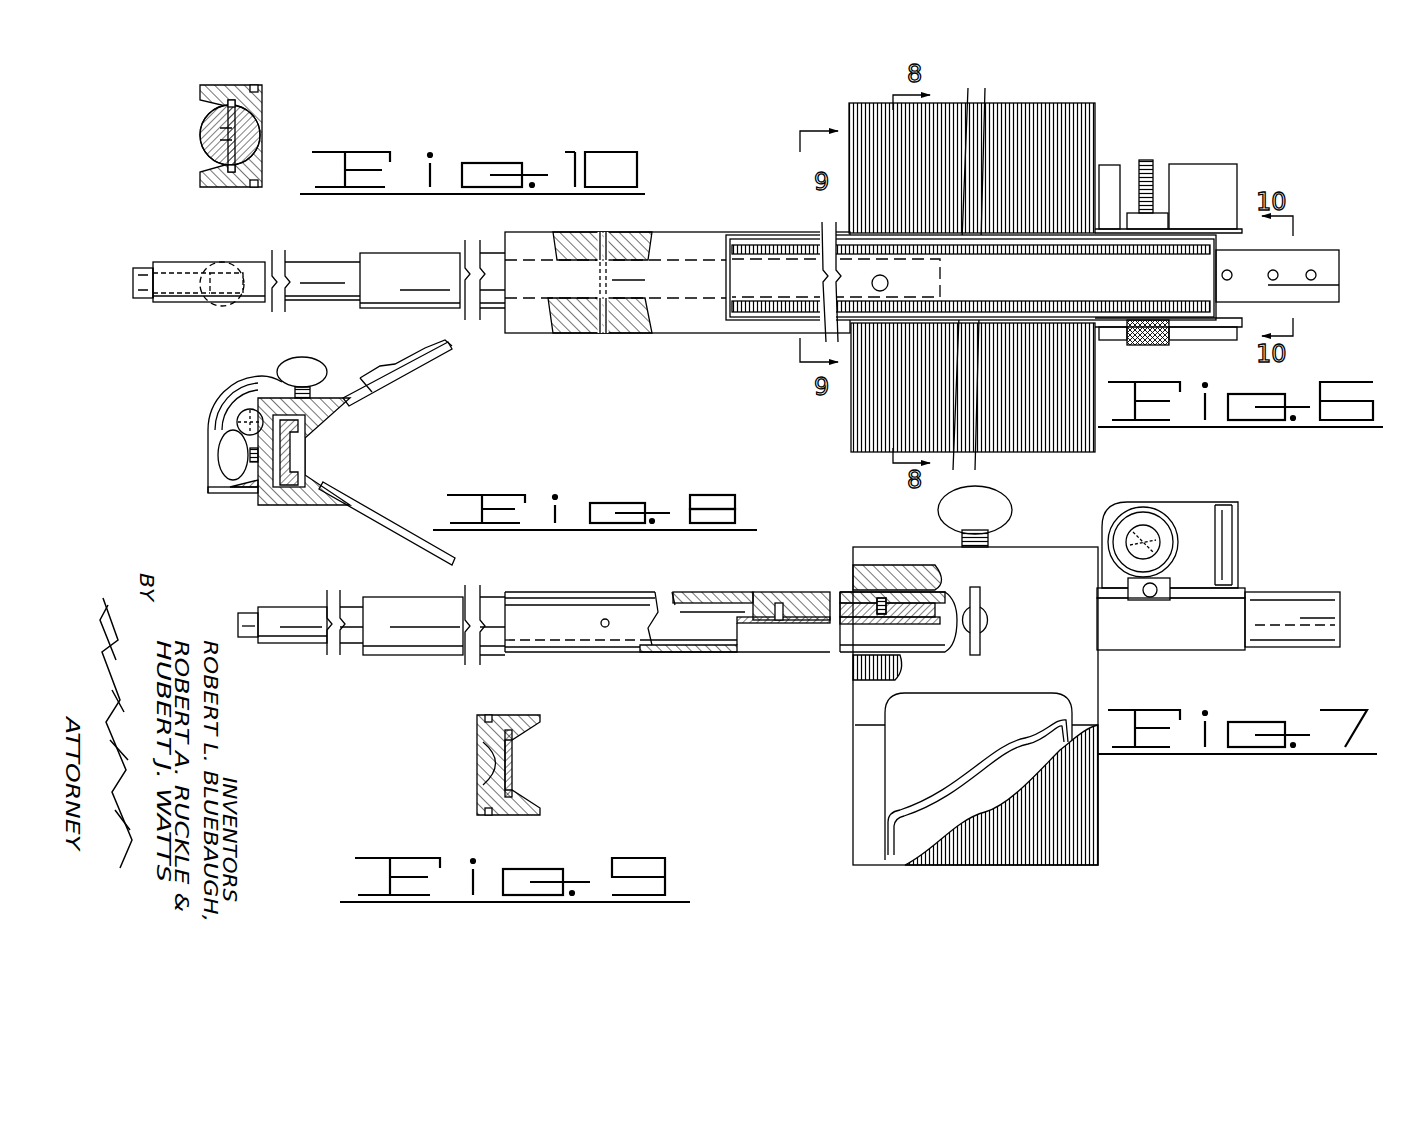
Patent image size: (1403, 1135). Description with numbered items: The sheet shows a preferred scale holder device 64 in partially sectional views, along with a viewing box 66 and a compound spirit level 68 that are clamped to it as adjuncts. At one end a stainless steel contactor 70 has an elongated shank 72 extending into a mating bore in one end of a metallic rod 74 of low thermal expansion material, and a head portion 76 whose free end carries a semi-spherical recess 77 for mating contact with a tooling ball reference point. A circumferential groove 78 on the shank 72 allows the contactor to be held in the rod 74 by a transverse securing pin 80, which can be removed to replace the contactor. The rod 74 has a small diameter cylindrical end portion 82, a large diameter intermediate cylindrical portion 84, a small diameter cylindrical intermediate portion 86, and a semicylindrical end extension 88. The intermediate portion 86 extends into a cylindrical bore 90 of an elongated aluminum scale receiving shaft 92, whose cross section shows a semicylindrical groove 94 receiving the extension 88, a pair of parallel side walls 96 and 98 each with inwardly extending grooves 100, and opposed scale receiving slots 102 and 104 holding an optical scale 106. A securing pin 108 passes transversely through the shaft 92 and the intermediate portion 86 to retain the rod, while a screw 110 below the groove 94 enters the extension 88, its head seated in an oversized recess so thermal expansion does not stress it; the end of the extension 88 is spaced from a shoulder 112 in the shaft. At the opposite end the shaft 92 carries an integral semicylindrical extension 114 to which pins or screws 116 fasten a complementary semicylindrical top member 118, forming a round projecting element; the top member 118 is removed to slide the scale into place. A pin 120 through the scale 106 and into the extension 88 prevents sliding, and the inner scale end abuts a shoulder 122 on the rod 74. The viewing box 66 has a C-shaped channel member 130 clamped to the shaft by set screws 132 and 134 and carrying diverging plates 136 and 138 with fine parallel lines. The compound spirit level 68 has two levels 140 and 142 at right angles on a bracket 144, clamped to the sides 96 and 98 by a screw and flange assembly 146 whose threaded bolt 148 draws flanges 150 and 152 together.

In FIG. 6, the scale holder device 64 is at (566, 231).
In FIG. 6, the viewing box 66 is at (1100, 120).
In FIG. 8, the viewing box 66 is at (265, 512).
In FIG. 7, the viewing box 66 is at (852, 786).
In FIG. 6, the compound spirit level 68 is at (1242, 188).
In FIG. 8, the compound spirit level 68 is at (207, 405).
In FIG. 7, the compound spirit level 68 is at (1246, 530).
In FIG. 6, the contactor 70 is at (150, 312).
In FIG. 6, the shank 72 is at (180, 283).
In FIG. 6, the rod 74 is at (396, 310).
In FIG. 7, the rod 74 is at (391, 658).
In FIG. 6, the head portion 76 is at (142, 300).
In FIG. 7, the head portion 76 is at (252, 625).
In FIG. 6, the semi-spherical recess 77 is at (133, 286).
In FIG. 6, the circumferential groove 78 is at (224, 294).
In FIG. 6, the securing pin 80 is at (222, 302).
In FIG. 6, the small diameter cylindrical end portion 82 is at (318, 287).
In FIG. 7, the small diameter cylindrical end portion 82 is at (297, 630).
In FIG. 6, the large diameter intermediate cylindrical portion 84 is at (425, 293).
In FIG. 7, the large diameter intermediate cylindrical portion 84 is at (386, 600).
In FIG. 6, the small diameter cylindrical intermediate portion 86 is at (586, 308).
In FIG. 7, the small diameter cylindrical intermediate portion 86 is at (707, 595).
In FIG. 7, the semicylindrical end extension 88 is at (758, 595).
In FIG. 9, the semicylindrical end extension 88 is at (487, 755).
In FIG. 6, the cylindrical bore 90 is at (640, 236).
In FIG. 7, the cylindrical bore 90 is at (670, 614).
In FIG. 6, the scale receiving shaft 92 is at (697, 335).
In FIG. 7, the scale receiving shaft 92 is at (619, 657).
In FIG. 9, the scale receiving shaft 92 is at (476, 795).
In FIG. 10, the scale receiving shaft 92 is at (266, 93).
In FIG. 9, the semicylindrical groove 94 is at (483, 770).
In FIG. 9, the side wall 96 is at (521, 816).
In FIG. 10, the side wall 96 is at (238, 188).
In FIG. 9, the side wall 98 is at (515, 720).
In FIG. 10, the side wall 98 is at (233, 85).
In FIG. 9, the inwardly extending grooves 100 is at (490, 714).
In FIG. 10, the inwardly extending grooves 100 is at (256, 85).
In FIG. 9, the scale receiving slot 102 is at (515, 737).
In FIG. 10, the scale receiving slot 102 is at (228, 100).
In FIG. 9, the scale receiving slot 104 is at (514, 793).
In FIG. 10, the scale receiving slot 104 is at (228, 172).
In FIG. 6, the optical scale 106 is at (750, 290).
In FIG. 7, the optical scale 106 is at (756, 625).
In FIG. 9, the optical scale 106 is at (513, 766).
In FIG. 6, the securing pin 108 is at (604, 333).
In FIG. 7, the securing pin 108 is at (605, 618).
In FIG. 7, the screw 110 is at (884, 597).
In FIG. 7, the shoulder 112 is at (978, 588).
In FIG. 7, the semicylindrical extension 114 is at (1298, 598).
In FIG. 10, the semicylindrical extension 114 is at (250, 130).
In FIG. 6, the pins or screws 116 is at (1311, 281).
In FIG. 10, the pins or screws 116 is at (200, 118).
In FIG. 6, the semicylindrical top member 118 is at (1296, 265).
In FIG. 7, the semicylindrical top member 118 is at (1292, 626).
In FIG. 10, the semicylindrical top member 118 is at (215, 145).
In FIG. 7, the pin 120 is at (781, 620).
In FIG. 7, the shoulder 122 is at (738, 645).
In FIG. 8, the C-shaped channel member 130 is at (296, 495).
In FIG. 8, the set screw 132 is at (232, 455).
In FIG. 7, the set screw 132 is at (988, 628).
In FIG. 8, the set screw 134 is at (303, 370).
In FIG. 7, the set screw 134 is at (990, 508).
In FIG. 8, the diverging plate 136 is at (390, 525).
In FIG. 8, the diverging plate 138 is at (447, 356).
In FIG. 8, the spirit level 140 is at (246, 490).
In FIG. 7, the spirit level 140 is at (1148, 538).
In FIG. 8, the spirit level 142 is at (250, 415).
In FIG. 7, the spirit level 142 is at (1218, 530).
In FIG. 7, the bracket 144 is at (1228, 586).
In FIG. 6, the screw and flange assembly 146 is at (1152, 160).
In FIG. 6, the threaded bolt 148 is at (1134, 342).
In FIG. 6, the flange 150 is at (1200, 332).
In FIG. 6, the flange 152 is at (1160, 219).